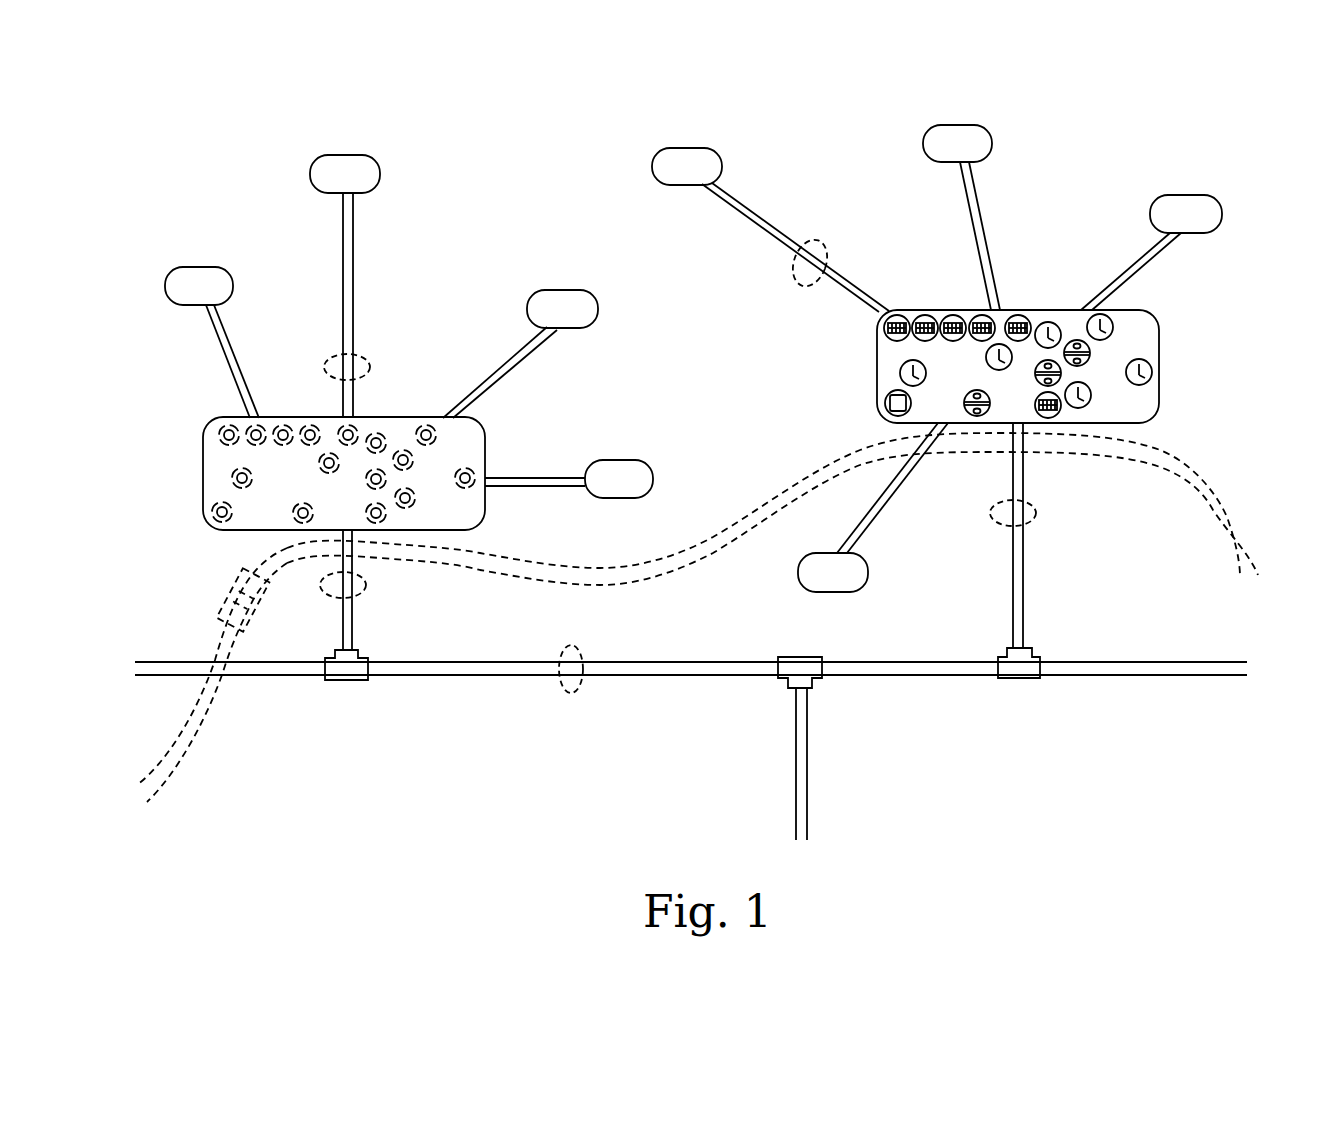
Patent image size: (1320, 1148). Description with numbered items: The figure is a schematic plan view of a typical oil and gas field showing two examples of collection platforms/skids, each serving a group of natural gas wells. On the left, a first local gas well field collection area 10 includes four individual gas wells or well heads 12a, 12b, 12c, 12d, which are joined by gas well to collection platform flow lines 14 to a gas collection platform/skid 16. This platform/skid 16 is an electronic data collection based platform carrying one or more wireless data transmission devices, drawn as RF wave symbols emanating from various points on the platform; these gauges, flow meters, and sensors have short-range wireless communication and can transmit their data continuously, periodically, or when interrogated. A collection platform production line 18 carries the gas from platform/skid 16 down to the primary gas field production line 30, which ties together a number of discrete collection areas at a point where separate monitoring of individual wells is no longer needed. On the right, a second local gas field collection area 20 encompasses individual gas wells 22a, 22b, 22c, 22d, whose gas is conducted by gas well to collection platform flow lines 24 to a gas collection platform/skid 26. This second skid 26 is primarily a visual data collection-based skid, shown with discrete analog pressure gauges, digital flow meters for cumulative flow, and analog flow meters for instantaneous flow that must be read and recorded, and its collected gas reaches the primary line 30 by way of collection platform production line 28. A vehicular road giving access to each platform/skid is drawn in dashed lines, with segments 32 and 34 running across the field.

The first local gas well field collection area 10 is at (272, 236).
The gas well 12a is at (165, 285).
The gas well 12b is at (380, 172).
The gas well 12c is at (563, 290).
The gas well 12d is at (620, 460).
The gas well to collection platform flow line 14 is at (370, 367).
The gas collection platform/skid 16 is at (199, 449).
The collection platform production line 18 is at (368, 587).
The second local gas field collection area 20 is at (1050, 186).
The gas well 22a is at (652, 167).
The gas well 22b is at (923, 143).
The gas well 22c is at (1222, 213).
The gas well 22d is at (868, 570).
The gas well to collection platform flow line 24 is at (797, 282).
The gas collection platform/skid 26 is at (1164, 375).
The collection platform production line 28 is at (1037, 515).
The primary gas field production line 30 is at (571, 693).
The cable 32 is at (802, 492).
The connector 34 is at (230, 587).